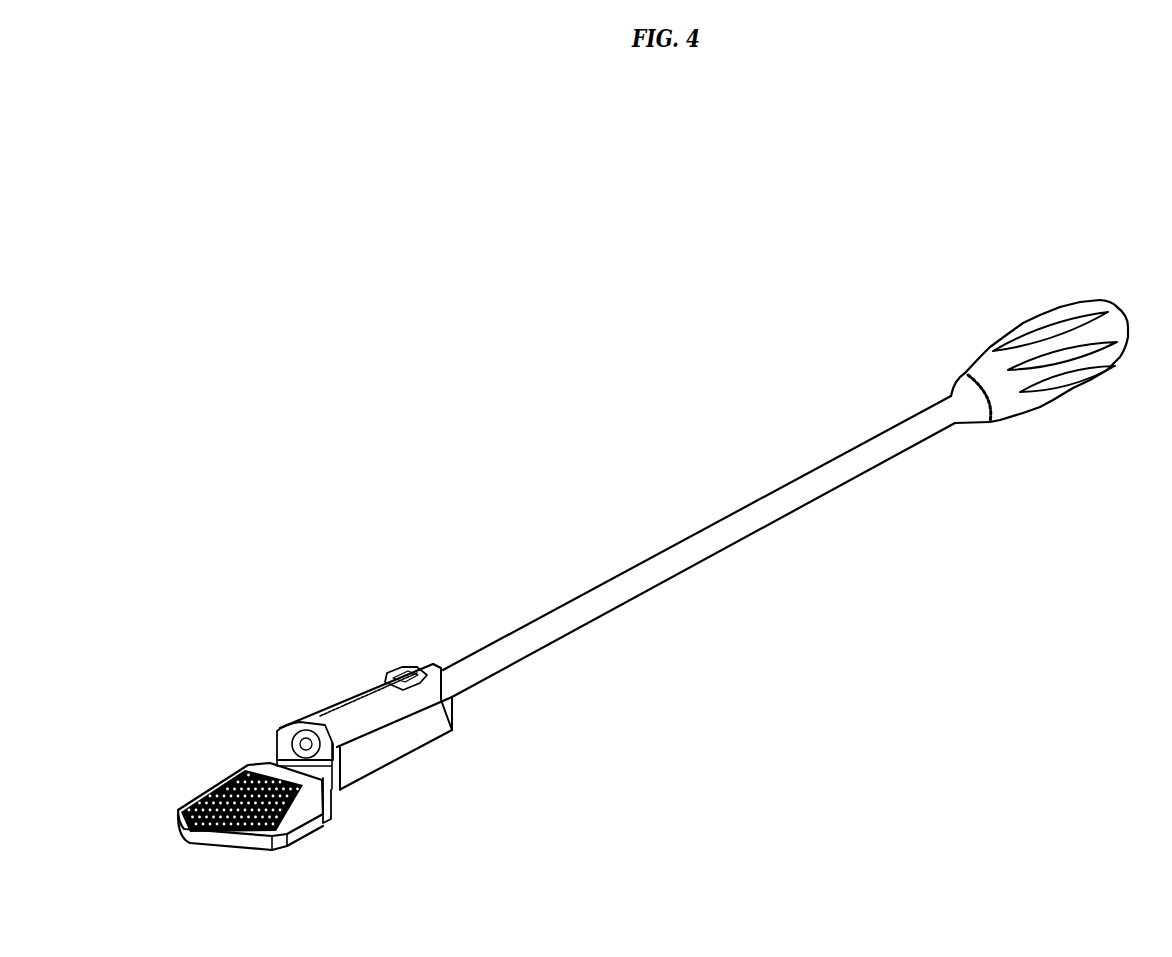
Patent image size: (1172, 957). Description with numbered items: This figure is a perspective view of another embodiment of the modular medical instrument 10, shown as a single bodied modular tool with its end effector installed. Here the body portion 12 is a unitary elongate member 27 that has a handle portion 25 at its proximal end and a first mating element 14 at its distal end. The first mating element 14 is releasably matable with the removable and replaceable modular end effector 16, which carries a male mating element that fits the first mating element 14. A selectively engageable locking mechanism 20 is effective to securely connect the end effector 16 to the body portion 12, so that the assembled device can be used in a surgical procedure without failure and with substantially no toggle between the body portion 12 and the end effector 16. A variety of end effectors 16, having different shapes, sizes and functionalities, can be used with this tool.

The surgical instrument 10 is at (465, 382).
The body portion 12 is at (578, 648).
The first mating element 14 is at (368, 773).
The end effector 16 is at (297, 838).
The locking mechanism 20 is at (392, 667).
The handle portion 25 is at (1018, 327).
The unitary elongate member 27 is at (730, 546).